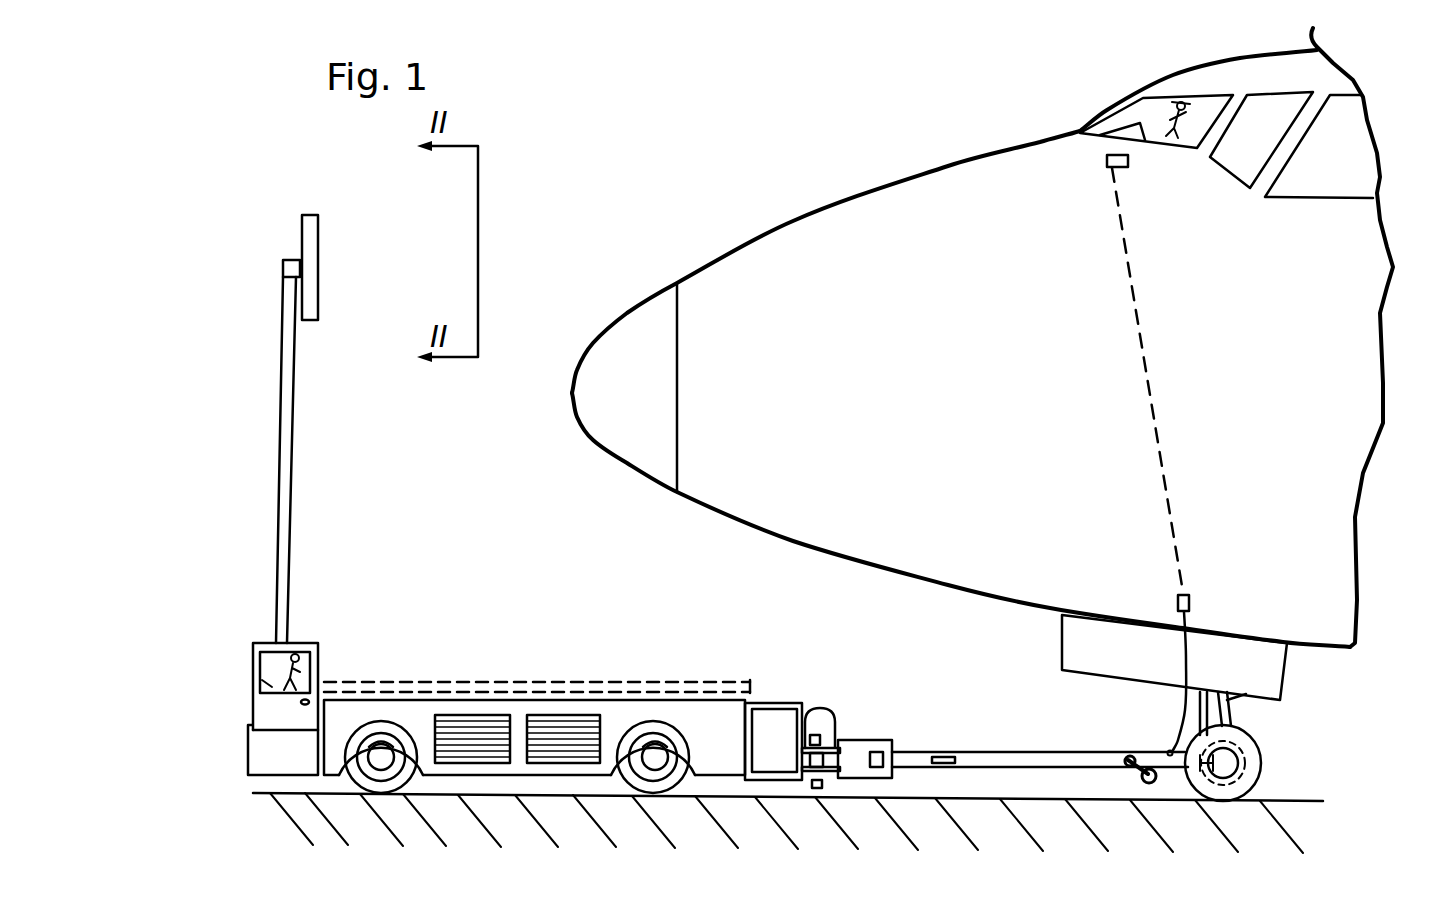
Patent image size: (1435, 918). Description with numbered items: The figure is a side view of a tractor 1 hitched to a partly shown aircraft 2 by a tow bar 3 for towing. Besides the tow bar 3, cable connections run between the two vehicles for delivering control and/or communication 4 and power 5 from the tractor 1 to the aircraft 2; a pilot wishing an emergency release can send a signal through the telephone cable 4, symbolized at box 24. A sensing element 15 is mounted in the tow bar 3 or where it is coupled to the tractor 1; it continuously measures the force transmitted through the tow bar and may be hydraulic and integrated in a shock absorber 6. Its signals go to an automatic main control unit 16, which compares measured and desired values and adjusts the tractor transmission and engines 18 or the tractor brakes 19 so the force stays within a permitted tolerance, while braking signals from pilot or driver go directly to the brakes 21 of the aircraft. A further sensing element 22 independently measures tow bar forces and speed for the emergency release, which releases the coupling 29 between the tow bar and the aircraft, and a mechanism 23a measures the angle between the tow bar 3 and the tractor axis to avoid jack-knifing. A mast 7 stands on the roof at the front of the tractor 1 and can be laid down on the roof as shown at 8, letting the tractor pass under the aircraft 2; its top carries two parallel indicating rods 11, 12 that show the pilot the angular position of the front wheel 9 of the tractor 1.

The tractor 1 is at (532, 545).
The aircraft 2 is at (862, 213).
The tow bar 3 is at (1000, 757).
The control and/or communication cable connection 4 is at (1183, 727).
The power connection 5 is at (1197, 707).
The shock absorber 6 is at (890, 730).
The mast 7 is at (293, 470).
The laid-down mast position 8 is at (563, 683).
The front wheel 9 is at (380, 777).
The indicating rod 11 is at (352, 267).
The indicating rod 12 is at (318, 243).
The sensing element 15 is at (893, 742).
The automatic main control unit 16 is at (762, 709).
The tractor transmission and engines 18 is at (535, 714).
The tractor brakes 19 is at (380, 738).
The brakes of the aircraft 21 is at (1262, 747).
The sensing element 22 is at (953, 756).
The angle measuring mechanism 23a is at (825, 736).
The pilot emergency release signal means 24 is at (1128, 163).
The coupling 29 is at (1191, 776).